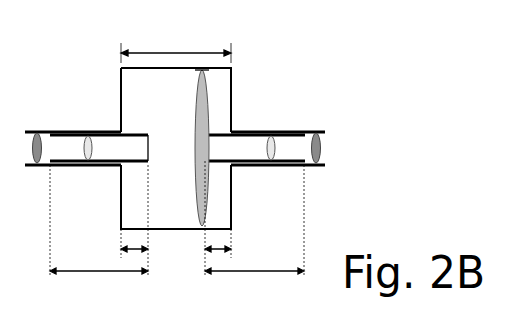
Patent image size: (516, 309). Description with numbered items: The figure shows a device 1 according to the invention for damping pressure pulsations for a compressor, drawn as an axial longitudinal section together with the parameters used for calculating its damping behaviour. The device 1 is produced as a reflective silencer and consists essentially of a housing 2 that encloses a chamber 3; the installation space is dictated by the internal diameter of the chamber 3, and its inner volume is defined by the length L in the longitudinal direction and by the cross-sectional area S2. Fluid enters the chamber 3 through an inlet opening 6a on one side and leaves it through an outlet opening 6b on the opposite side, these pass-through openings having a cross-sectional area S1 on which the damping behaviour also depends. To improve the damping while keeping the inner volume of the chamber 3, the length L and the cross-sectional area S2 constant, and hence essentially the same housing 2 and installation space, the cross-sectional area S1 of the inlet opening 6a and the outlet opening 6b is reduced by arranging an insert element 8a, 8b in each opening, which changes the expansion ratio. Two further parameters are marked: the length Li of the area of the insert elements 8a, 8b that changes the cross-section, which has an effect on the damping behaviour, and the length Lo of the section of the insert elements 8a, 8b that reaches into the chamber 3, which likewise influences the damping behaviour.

The device 1 is at (277, 62).
The housing 2 is at (120, 74).
The chamber 3 is at (225, 83).
The inlet opening 6a is at (117, 150).
The outlet opening 6b is at (236, 145).
The insert element 8a is at (150, 131).
The insert element 8b is at (200, 132).
The cross-sectional area of the pass-through openings S1 is at (35, 131).
The cross-sectional area of the chamber S2 is at (198, 70).
The length L is at (176, 53).
The length of the section inside the chamber Lo is at (176, 218).
The length of the cross-section-changing area Li is at (177, 227).